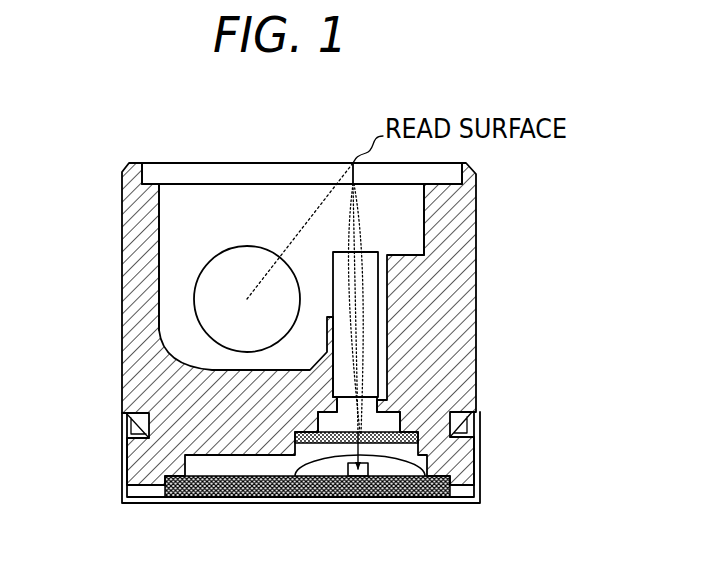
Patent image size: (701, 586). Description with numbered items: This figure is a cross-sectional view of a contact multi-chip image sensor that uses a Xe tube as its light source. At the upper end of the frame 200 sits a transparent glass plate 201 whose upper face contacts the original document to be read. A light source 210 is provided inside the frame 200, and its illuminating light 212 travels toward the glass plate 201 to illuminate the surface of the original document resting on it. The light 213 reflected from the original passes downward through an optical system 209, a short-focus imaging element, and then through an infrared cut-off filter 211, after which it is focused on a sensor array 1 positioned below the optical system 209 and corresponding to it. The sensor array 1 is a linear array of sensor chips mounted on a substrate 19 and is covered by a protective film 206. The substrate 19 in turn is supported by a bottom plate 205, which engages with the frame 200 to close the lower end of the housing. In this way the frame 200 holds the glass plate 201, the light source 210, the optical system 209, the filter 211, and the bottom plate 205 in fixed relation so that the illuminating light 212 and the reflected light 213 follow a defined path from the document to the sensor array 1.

The sensor array 1 is at (362, 473).
The substrate 19 is at (210, 498).
The frame 200 is at (137, 394).
The transparent glass plate 201 is at (217, 165).
The bottom plate 205 is at (481, 479).
The protective film 206 is at (330, 458).
The optical system 209 is at (367, 275).
The light source 210 is at (212, 298).
The infrared cut-off filter 211 is at (408, 431).
The illuminating light 212 is at (358, 203).
The reflected light 213 is at (358, 203).